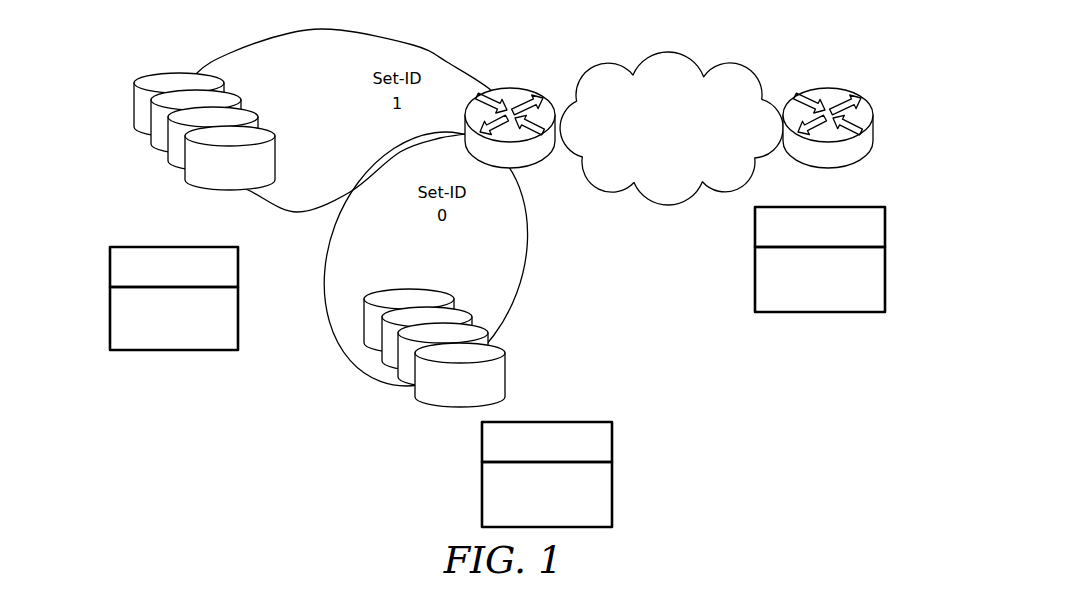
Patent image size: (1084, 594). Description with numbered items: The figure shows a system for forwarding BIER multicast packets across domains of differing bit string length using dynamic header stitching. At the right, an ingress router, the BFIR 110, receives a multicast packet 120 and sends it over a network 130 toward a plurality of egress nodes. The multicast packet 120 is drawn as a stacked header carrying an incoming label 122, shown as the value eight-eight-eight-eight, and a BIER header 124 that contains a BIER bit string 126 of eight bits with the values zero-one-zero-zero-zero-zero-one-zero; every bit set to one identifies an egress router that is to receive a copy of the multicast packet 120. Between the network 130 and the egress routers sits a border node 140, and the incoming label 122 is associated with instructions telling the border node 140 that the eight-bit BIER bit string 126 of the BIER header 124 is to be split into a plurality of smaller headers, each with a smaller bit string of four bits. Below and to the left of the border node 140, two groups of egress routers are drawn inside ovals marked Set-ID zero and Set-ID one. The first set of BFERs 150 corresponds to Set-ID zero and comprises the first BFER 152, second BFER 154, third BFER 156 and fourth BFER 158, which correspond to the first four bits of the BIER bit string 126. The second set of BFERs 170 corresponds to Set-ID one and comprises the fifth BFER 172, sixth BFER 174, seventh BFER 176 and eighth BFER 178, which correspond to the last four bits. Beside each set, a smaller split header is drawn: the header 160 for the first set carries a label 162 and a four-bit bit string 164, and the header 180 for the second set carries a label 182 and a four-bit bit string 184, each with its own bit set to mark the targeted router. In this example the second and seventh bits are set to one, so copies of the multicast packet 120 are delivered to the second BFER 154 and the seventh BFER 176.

The BFIR 110 is at (865, 95).
The multicast packet 120 is at (815, 259).
The incoming label 122 is at (885, 226).
The BIER header 124 is at (885, 280).
The BIER bit string 126 is at (768, 277).
The network 130 is at (655, 138).
The border node 140 is at (510, 88).
The first set of BFERs 150 is at (448, 358).
The first BFER 152 is at (506, 371).
The second BFER 154 is at (488, 334).
The third BFER 156 is at (468, 312).
The fourth BFER 158 is at (430, 293).
The packet header for set 0 160 is at (551, 474).
The label 4444 162 is at (612, 442).
The bit string 0010 164 is at (612, 495).
The second set of BFERs 170 is at (222, 124).
The fifth BFER 172 is at (276, 153).
The sixth BFER 174 is at (252, 115).
The seventh BFER 176 is at (240, 97).
The eighth BFER 178 is at (182, 72).
The packet header for set 1 180 is at (179, 298).
The label 4444 182 is at (238, 263).
The bit string 0100 184 is at (238, 315).